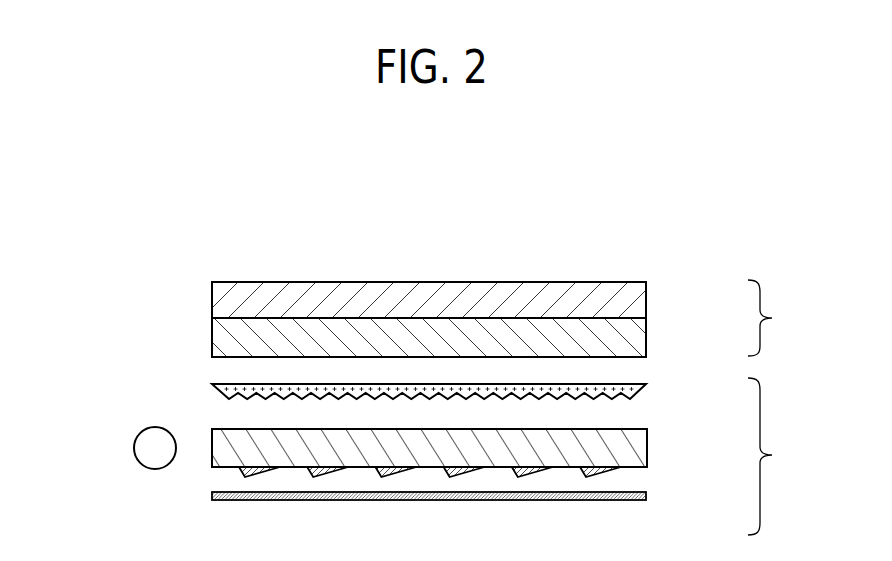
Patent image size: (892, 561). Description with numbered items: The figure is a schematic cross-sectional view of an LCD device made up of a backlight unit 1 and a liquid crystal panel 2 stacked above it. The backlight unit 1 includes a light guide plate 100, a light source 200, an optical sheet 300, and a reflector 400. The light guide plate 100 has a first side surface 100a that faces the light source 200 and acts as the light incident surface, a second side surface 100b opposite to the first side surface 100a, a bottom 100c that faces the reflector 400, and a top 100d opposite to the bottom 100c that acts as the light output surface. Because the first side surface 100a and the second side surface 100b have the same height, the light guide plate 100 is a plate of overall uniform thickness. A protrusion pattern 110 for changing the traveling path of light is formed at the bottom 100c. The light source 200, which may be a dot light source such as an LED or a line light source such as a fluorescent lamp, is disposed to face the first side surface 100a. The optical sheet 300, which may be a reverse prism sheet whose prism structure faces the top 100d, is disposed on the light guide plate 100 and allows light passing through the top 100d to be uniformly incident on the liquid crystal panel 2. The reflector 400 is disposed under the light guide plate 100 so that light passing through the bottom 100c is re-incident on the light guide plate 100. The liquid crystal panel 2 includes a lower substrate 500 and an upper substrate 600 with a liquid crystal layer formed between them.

The backlight unit 1 is at (770, 456).
The liquid crystal panel 2 is at (769, 318).
The light guide plate 100 is at (637, 450).
The first side surface 100a is at (213, 440).
The second side surface 100b is at (647, 437).
The bottom 100c is at (632, 468).
The top 100d is at (599, 429).
The protrusion pattern 110 is at (239, 471).
The light source 200 is at (133, 448).
The optical sheet 300 is at (646, 387).
The reflector 400 is at (646, 496).
The lower substrate 500 is at (646, 338).
The upper substrate 600 is at (646, 295).